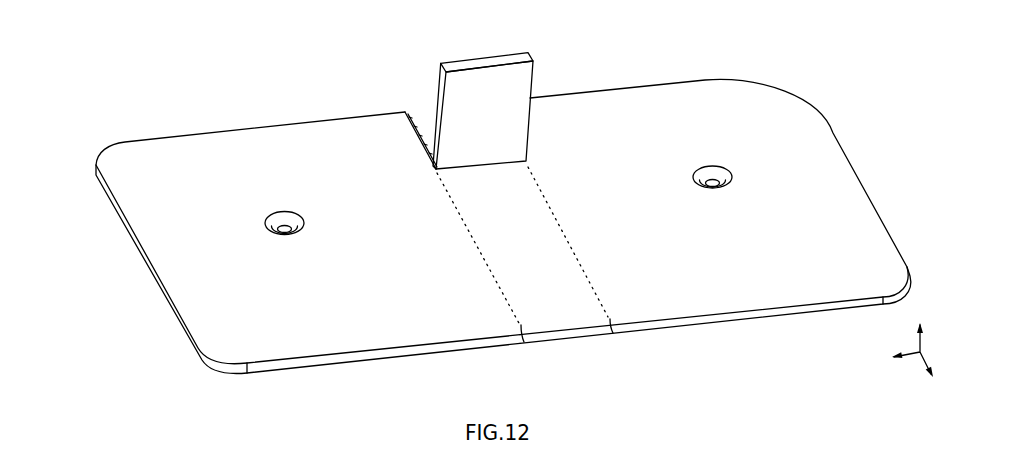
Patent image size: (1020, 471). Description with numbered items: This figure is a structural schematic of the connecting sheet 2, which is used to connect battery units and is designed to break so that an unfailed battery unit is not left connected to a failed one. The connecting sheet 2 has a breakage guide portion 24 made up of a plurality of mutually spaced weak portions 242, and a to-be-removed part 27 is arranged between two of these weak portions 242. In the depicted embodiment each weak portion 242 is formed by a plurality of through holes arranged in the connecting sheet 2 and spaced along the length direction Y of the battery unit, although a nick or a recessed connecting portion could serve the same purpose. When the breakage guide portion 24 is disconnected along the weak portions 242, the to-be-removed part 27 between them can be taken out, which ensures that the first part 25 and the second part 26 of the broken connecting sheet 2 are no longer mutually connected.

The connecting sheet 2 is at (93, 103).
The breakage guide portion 24 is at (370, 65).
The first part 25 is at (277, 135).
The second part 26 is at (643, 90).
The to-be-removed part 27 is at (507, 58).
The weak portion 242 is at (523, 342).